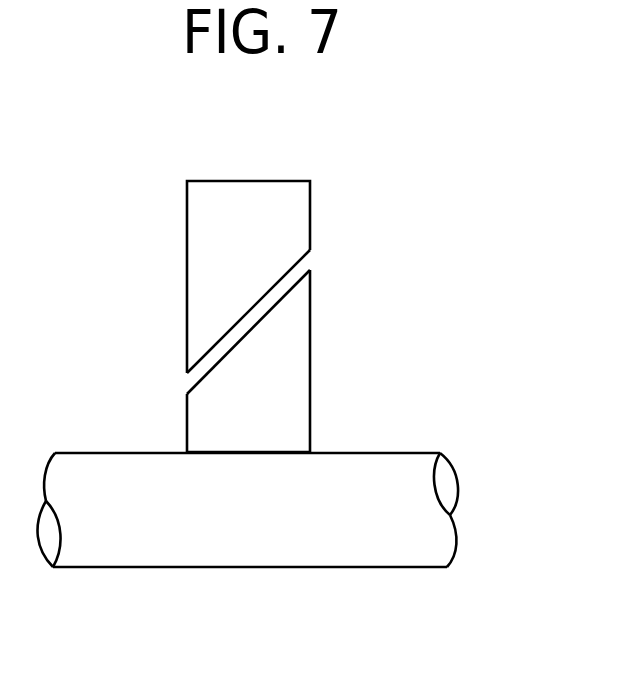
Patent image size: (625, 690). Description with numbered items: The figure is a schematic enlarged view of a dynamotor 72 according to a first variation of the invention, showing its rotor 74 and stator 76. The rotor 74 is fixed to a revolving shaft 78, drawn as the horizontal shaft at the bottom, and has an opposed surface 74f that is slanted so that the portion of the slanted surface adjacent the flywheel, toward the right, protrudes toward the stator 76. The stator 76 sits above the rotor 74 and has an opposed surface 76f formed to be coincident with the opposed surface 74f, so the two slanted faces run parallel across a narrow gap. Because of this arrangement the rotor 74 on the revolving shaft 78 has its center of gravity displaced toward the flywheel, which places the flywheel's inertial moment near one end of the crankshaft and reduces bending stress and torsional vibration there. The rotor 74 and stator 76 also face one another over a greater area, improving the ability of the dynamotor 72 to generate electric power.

The dynamotor 72 is at (400, 188).
The rotor 74 is at (302, 415).
The opposed surface 74f is at (280, 299).
The stator 76 is at (197, 228).
The opposed surface 76f is at (230, 331).
The revolving shaft 78 is at (435, 549).